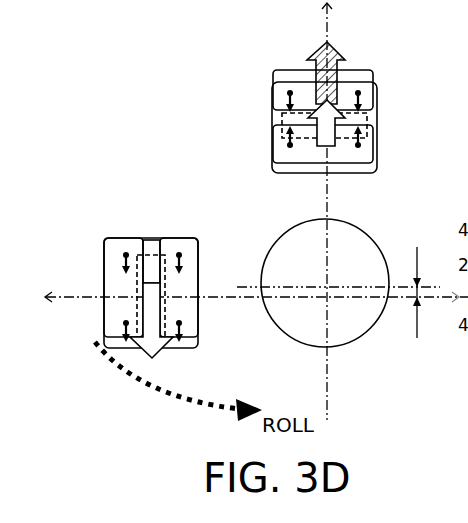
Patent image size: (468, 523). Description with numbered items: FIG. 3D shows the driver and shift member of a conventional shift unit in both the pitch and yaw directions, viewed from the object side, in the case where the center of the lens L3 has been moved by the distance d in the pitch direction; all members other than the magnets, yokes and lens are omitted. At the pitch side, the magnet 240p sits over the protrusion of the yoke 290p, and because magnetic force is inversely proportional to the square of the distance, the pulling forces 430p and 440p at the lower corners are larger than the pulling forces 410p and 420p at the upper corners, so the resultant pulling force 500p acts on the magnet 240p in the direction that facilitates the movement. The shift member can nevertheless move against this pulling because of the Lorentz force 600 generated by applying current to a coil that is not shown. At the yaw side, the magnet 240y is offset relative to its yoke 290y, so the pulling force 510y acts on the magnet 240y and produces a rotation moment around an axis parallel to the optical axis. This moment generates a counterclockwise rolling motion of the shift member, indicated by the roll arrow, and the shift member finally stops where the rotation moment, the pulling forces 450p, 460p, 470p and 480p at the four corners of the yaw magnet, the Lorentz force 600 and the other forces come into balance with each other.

The magnet 240p is at (285, 75).
The magnet 240y is at (106, 292).
The yoke 290p is at (370, 117).
The yoke 290y is at (156, 245).
The pulling force 410p is at (287, 98).
The pulling force 420p is at (365, 100).
The pulling force 430p is at (287, 137).
The pulling force 440p is at (363, 143).
The pulling force 450p is at (122, 323).
The pulling force 460p is at (122, 255).
The pulling force 470p is at (183, 330).
The pulling force 480p is at (183, 265).
The pulling force 500p is at (330, 135).
The pulling force 510y is at (140, 285).
The Lorentz force 600 is at (335, 80).
The lens L3 is at (355, 327).
The distance d is at (422, 292).